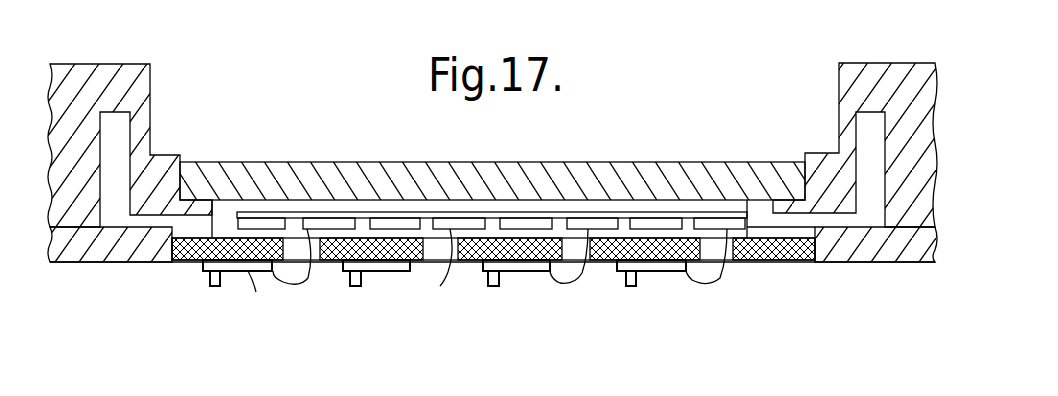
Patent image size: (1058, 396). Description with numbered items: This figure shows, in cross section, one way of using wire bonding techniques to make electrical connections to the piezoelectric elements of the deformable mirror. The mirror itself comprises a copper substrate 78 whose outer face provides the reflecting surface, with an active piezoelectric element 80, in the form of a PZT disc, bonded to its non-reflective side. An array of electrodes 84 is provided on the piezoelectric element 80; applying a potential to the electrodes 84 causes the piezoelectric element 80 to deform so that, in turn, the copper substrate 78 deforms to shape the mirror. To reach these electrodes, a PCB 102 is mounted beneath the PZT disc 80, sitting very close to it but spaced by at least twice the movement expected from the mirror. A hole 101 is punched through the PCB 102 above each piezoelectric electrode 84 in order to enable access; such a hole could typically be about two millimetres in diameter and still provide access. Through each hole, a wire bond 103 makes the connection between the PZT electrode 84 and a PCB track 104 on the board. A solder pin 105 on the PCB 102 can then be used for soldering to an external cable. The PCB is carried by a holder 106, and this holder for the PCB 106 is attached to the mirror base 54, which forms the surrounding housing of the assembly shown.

The mirror base 54 is at (845, 92).
The copper substrate 78 is at (667, 131).
The piezoelectric element 80 is at (530, 207).
The electrodes 84 is at (389, 218).
The hole 101 is at (455, 265).
The PCB 102 is at (827, 289).
The wire bond 103 is at (411, 270).
The PCB track 104 is at (307, 299).
The solder pin 105 is at (243, 314).
The holder for the PCB 106 is at (868, 256).